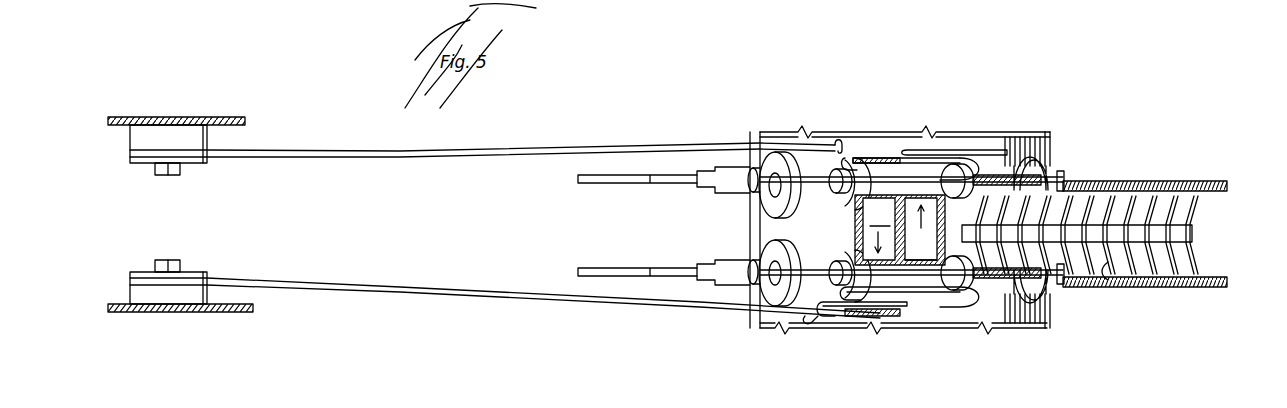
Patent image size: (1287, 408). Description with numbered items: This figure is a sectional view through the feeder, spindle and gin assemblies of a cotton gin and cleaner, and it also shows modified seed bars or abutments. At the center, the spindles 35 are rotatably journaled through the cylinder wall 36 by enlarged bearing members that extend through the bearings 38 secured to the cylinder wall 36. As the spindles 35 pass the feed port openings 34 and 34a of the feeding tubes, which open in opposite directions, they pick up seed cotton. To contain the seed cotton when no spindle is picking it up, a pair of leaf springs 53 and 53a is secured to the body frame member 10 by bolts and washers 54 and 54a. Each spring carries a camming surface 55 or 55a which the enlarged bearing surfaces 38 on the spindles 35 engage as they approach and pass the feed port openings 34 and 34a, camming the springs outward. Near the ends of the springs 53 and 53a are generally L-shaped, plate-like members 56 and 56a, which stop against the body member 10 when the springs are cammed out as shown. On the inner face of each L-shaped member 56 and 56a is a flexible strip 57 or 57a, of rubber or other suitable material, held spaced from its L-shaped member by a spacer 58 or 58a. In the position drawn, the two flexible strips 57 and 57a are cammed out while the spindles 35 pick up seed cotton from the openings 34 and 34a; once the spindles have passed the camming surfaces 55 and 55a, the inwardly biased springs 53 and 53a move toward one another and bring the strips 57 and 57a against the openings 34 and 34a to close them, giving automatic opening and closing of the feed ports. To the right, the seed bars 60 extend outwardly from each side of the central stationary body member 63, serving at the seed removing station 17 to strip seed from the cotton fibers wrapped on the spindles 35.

The body frame member 10 is at (177, 313).
The seed removing station 17 is at (1196, 210).
The feed port opening 34 is at (900, 230).
The feed port opening 34a is at (912, 265).
The spindle 35 is at (683, 186).
The cylinder wall 36 is at (747, 222).
The bearing 38 is at (756, 168).
The leaf spring 53 is at (447, 158).
The leaf spring 53a is at (415, 287).
The bolts and washers 54 is at (183, 168).
The bolts and washers 54a is at (182, 269).
The camming surface 55 is at (812, 150).
The camming surface 55a is at (800, 322).
The L-shaped plate-like member 56 is at (908, 165).
The L-shaped plate-like member 56a is at (838, 318).
The flexible strip 57 is at (872, 172).
The flexible strip 57a is at (850, 320).
The spacer 58 is at (970, 170).
The spacer 58a is at (968, 300).
The seed bar 60 is at (1122, 272).
The central stationary body member 63 is at (1193, 235).